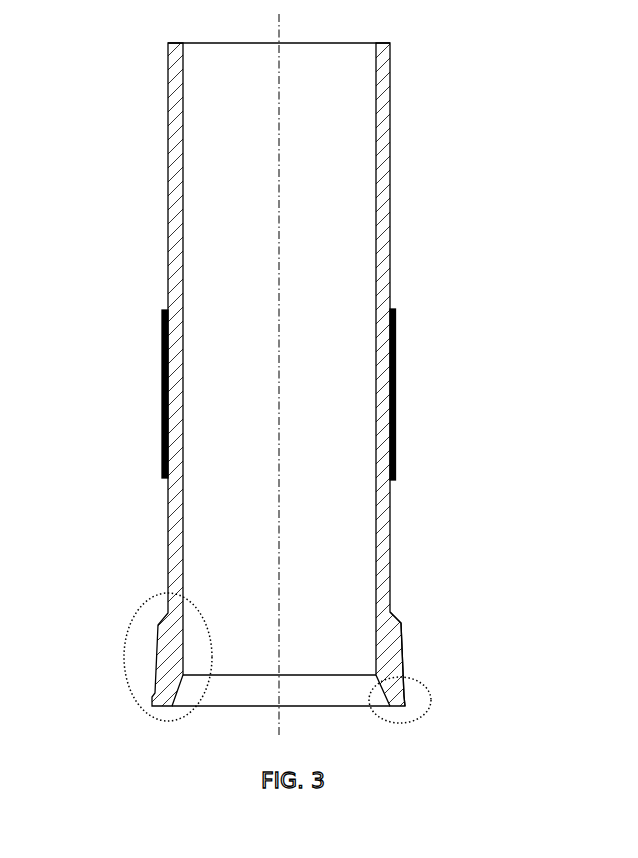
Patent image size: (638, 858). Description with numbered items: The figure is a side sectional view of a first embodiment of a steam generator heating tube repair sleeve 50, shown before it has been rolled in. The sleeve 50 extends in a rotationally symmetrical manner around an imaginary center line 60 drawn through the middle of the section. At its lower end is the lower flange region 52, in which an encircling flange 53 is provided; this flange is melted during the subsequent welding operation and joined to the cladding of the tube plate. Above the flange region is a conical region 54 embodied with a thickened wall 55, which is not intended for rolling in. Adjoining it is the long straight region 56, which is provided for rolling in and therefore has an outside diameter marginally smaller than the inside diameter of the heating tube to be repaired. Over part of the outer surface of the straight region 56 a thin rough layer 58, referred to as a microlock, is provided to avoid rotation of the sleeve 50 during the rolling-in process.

The steam generator heating tube repair sleeve 50 is at (292, 384).
The lower flange region 52 is at (422, 683).
The encircling flange 53 is at (408, 703).
The conical region 54 is at (128, 635).
The thickened wall 55 is at (403, 642).
The straight region 56 is at (168, 266).
The thin rough layer 58 is at (160, 355).
The imaginary center line 60 is at (278, 200).